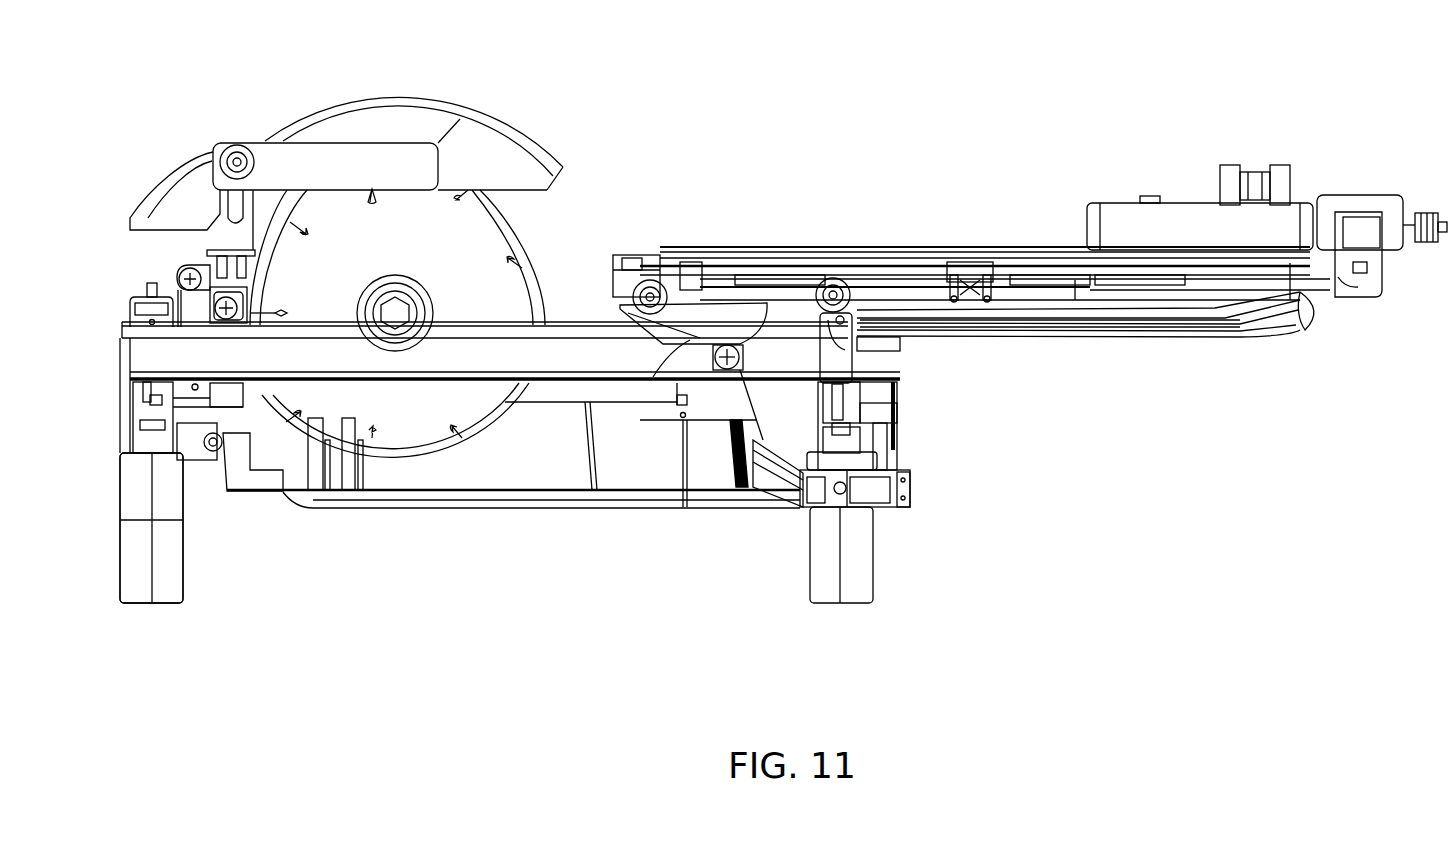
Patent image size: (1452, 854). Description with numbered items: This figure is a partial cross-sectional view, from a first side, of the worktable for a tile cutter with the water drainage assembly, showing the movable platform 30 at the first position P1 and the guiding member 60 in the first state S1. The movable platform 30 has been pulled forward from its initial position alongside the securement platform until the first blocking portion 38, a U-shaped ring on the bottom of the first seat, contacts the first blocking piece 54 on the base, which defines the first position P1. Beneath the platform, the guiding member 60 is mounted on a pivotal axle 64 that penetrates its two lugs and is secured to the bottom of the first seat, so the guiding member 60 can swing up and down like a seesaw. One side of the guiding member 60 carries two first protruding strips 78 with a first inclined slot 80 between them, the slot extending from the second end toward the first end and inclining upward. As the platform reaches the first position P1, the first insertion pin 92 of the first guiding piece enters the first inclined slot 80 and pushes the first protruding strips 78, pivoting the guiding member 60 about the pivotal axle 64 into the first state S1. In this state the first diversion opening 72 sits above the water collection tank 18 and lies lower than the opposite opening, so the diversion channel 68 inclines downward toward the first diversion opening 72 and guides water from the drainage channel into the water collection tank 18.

The water collection tank 18 is at (262, 518).
The movable platform 30 is at (1063, 218).
The first blocking portion 38 is at (684, 418).
The first blocking piece 54 is at (750, 487).
The guiding member 60 is at (1243, 348).
The pivotal axle 64 is at (978, 275).
The diversion channel 68 is at (704, 318).
The first diversion opening 72 is at (693, 335).
The first protruding strips 78 is at (1112, 322).
The first inclined slot 80 is at (1005, 323).
The first insertion pin 92 is at (838, 340).
The first state S1 is at (606, 312).
The first position P1 is at (1383, 187).